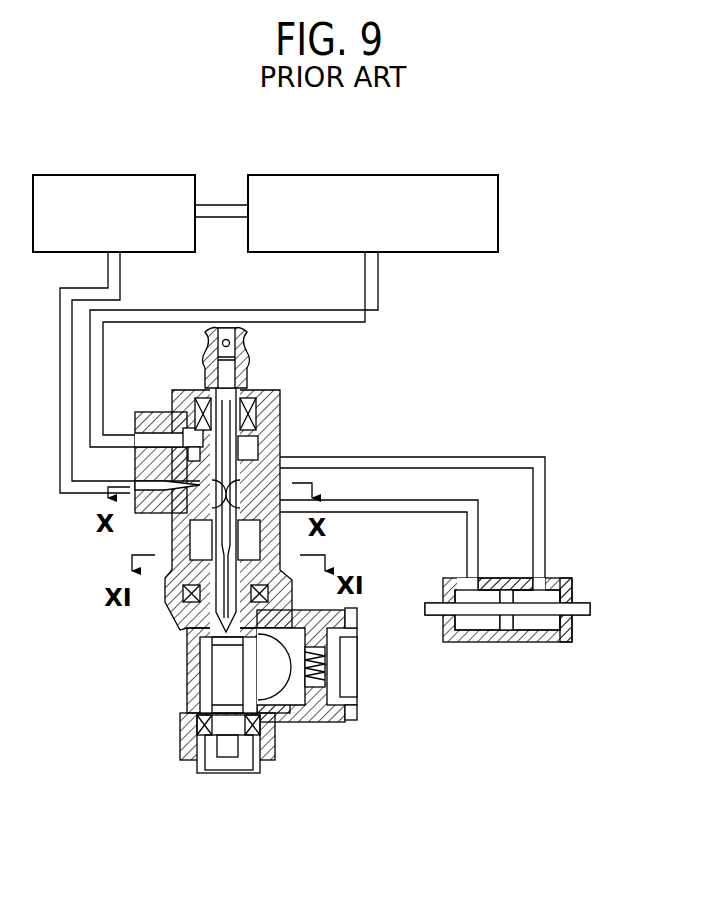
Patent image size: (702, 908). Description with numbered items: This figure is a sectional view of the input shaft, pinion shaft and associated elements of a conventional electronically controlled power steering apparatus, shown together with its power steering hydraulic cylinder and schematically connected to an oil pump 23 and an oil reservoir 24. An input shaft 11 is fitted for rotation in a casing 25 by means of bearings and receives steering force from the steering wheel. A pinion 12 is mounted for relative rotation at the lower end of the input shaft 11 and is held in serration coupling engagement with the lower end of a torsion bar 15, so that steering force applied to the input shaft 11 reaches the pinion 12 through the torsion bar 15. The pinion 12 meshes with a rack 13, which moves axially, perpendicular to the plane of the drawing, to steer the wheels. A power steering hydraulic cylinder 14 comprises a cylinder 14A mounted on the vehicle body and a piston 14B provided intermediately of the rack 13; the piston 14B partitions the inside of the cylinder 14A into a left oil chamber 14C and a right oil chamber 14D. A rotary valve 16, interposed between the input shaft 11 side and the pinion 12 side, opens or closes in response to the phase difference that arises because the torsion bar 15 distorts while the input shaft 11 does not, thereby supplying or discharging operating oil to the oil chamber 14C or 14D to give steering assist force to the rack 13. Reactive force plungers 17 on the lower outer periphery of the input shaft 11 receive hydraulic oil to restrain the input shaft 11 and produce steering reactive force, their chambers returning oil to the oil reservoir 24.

The input shaft 11 is at (242, 382).
The pinion 12 is at (205, 660).
The rack 13 is at (273, 678).
The power steering hydraulic cylinder 14 is at (519, 624).
The cylinder 14A is at (620, 545).
The piston 14B is at (507, 577).
The left oil chamber 14C is at (475, 627).
The right oil chamber 14D is at (543, 625).
The torsion bar 15 is at (227, 445).
The rotary valve 16 is at (257, 445).
The reactive force plungers 17 is at (172, 548).
The oil pump 23 is at (110, 175).
The oil reservoir 24 is at (445, 175).
The casing 25 is at (190, 733).